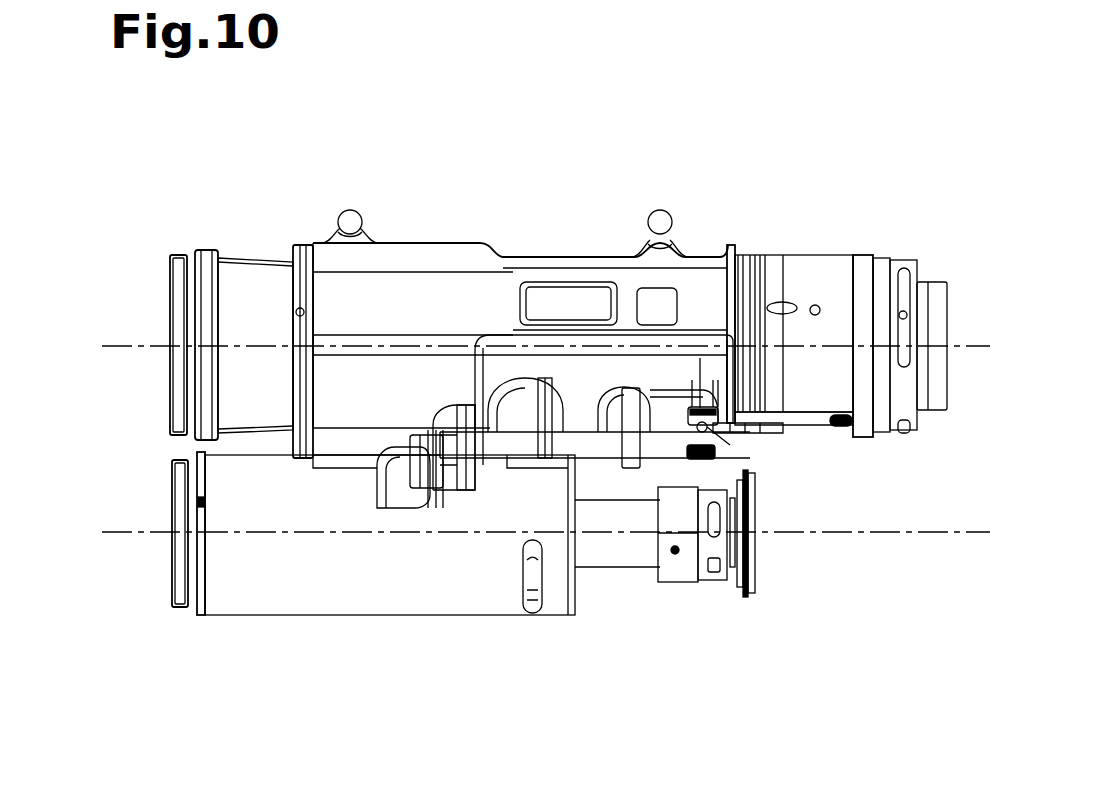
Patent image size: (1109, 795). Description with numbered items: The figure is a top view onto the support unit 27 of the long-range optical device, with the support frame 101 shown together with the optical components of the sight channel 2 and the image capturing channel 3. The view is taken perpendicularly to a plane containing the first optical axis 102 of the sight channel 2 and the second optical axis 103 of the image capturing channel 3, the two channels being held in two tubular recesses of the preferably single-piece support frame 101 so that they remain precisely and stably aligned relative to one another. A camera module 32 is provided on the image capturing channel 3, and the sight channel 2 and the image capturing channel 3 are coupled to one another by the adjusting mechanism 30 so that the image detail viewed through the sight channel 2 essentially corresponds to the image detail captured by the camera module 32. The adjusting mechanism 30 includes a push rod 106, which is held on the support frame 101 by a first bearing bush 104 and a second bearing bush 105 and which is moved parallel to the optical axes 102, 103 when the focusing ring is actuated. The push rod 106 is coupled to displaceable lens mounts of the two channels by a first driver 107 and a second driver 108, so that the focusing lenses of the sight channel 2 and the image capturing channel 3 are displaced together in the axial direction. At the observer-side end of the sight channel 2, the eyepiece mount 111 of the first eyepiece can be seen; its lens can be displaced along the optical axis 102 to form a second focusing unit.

The support unit 27 is at (432, 115).
The support frame 101 is at (607, 160).
The first optical axis 102 is at (140, 342).
The second optical axis 103 is at (140, 536).
The sight channel 2 is at (156, 378).
The image capturing channel 3 is at (158, 600).
The first bearing bush 104 is at (500, 470).
The second bearing bush 105 is at (613, 467).
The push rod 106 is at (662, 467).
The first driver 107 is at (567, 400).
The second driver 108 is at (417, 492).
The eyepiece mount 111 is at (937, 260).
The adjusting mechanism 30 is at (730, 453).
The camera module 32 is at (778, 567).